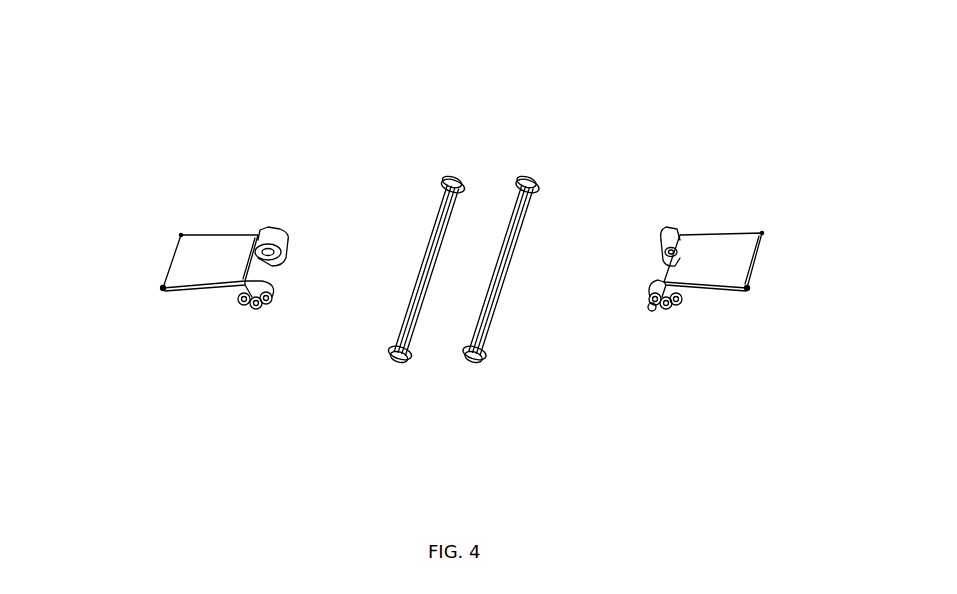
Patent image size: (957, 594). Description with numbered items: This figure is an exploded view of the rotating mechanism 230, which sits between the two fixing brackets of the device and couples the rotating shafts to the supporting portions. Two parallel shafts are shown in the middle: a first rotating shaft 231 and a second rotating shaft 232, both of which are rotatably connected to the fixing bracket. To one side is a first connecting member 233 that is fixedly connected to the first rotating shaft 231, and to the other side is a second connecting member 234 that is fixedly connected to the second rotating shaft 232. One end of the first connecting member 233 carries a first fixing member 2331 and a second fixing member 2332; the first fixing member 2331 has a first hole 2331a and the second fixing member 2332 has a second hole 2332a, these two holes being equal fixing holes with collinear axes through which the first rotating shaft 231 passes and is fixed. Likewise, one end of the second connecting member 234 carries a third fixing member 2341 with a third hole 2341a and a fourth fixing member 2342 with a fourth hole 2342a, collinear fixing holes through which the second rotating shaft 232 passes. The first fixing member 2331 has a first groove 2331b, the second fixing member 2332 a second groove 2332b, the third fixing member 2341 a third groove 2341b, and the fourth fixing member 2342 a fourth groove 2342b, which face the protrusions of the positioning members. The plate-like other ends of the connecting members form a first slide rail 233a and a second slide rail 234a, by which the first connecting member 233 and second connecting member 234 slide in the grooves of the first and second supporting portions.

The rotating mechanism 230 is at (200, 47).
The first rotating shaft 231 is at (398, 363).
The second rotating shaft 232 is at (475, 363).
The first connecting member 233 is at (155, 262).
The first slide rail 233a is at (200, 290).
The first fixing member 2331 is at (257, 221).
The first hole 2331a is at (290, 250).
The first groove 2331b is at (282, 226).
The second fixing member 2332 is at (238, 322).
The second hole 2332a is at (256, 312).
The second groove 2332b is at (272, 320).
The second connecting member 234 is at (767, 262).
The second slide rail 234a is at (715, 290).
The third fixing member 2341 is at (690, 218).
The third hole 2341a is at (655, 252).
The third groove 2341b is at (663, 218).
The fourth fixing member 2342 is at (677, 328).
The fourth hole 2342a is at (664, 312).
The fourth groove 2342b is at (641, 313).